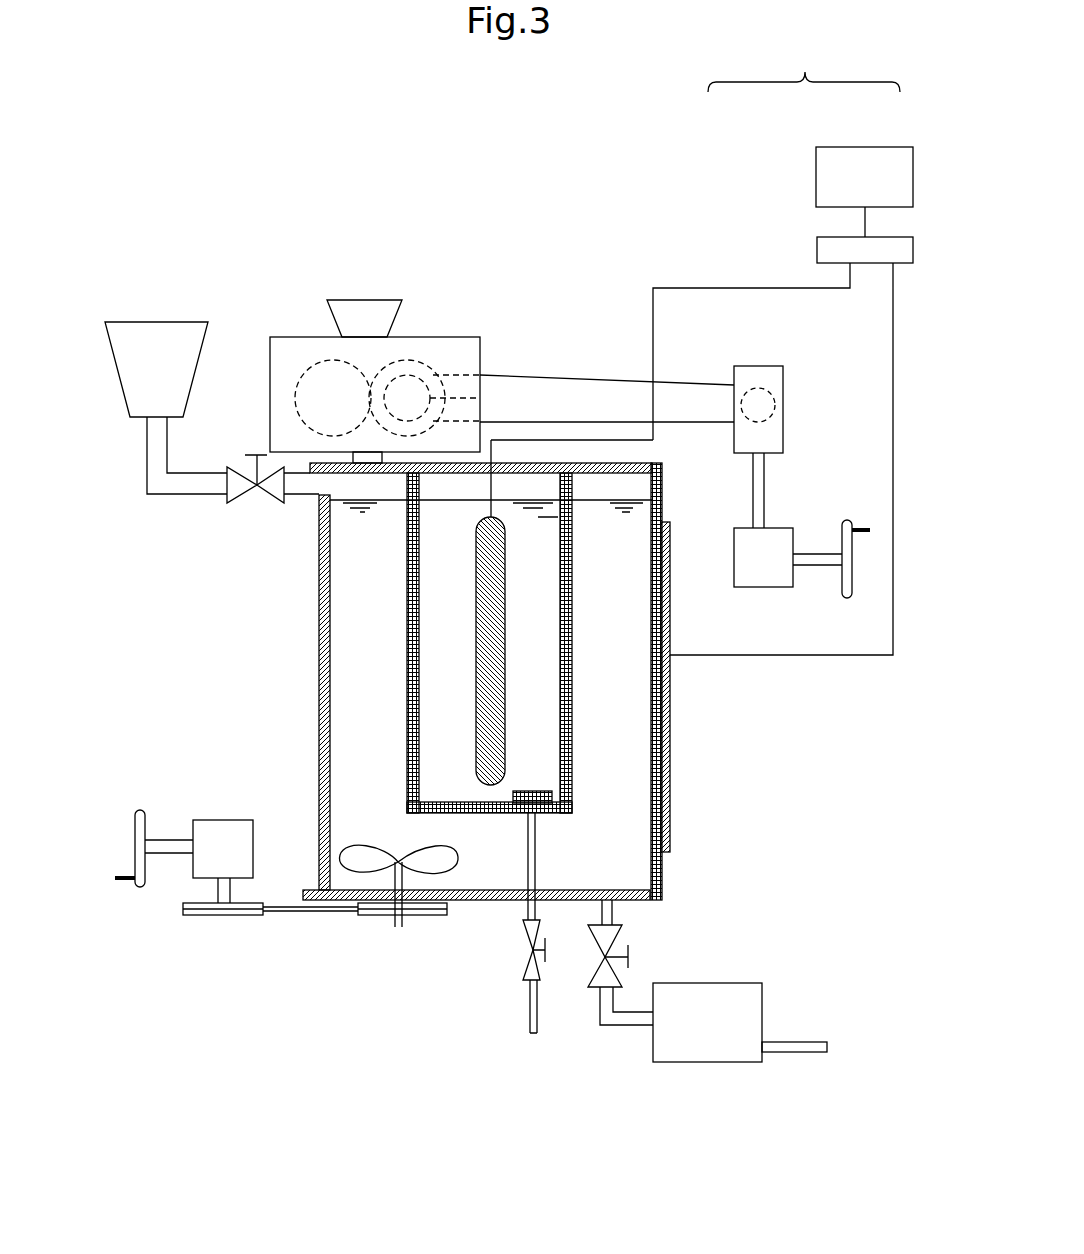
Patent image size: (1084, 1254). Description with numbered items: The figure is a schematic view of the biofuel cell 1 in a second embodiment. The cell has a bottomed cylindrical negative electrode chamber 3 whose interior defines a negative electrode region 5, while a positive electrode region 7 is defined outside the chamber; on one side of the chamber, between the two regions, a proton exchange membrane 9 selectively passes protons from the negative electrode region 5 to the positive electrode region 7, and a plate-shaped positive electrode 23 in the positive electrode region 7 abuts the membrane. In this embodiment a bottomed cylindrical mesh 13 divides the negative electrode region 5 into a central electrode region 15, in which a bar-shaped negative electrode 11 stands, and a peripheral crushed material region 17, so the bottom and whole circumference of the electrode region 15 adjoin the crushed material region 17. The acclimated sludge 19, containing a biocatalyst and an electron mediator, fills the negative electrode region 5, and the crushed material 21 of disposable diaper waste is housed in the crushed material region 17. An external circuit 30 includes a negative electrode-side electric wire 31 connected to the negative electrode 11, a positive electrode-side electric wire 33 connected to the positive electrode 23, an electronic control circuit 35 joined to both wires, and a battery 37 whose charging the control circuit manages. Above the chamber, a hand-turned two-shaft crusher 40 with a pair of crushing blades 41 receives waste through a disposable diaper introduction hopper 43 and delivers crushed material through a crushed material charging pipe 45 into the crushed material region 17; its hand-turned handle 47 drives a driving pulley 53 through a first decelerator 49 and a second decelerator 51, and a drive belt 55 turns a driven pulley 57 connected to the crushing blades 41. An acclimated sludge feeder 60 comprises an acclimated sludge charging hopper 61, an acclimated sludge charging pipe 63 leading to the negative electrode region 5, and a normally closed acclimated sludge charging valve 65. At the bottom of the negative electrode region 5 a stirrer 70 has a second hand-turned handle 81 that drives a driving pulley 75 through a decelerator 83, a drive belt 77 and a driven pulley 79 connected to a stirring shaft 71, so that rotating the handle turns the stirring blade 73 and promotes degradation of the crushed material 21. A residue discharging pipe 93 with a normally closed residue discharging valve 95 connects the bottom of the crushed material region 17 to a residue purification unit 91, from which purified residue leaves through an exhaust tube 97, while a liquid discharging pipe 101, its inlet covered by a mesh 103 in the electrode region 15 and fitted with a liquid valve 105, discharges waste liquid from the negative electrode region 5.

The biofuel cell 1 is at (236, 239).
The negative electrode chamber 3 is at (318, 745).
The negative electrode region 5 is at (498, 850).
The positive electrode region 7 is at (711, 708).
The proton exchange membrane 9 is at (662, 877).
The negative electrode 11 is at (492, 550).
The mesh 13 is at (407, 703).
The electrode region 15 is at (533, 732).
The crushed material region 17 is at (348, 628).
The acclimated sludge 19 is at (455, 523).
The crushed material 21 is at (353, 573).
The positive electrode 23 is at (670, 725).
The external circuit 30 is at (804, 66).
The negative electrode-side electric wire 31 is at (722, 288).
The positive electrode-side electric wire 33 is at (893, 377).
The electronic control circuit 35 is at (827, 252).
The battery 37 is at (853, 163).
The crusher 40 is at (476, 316).
The crushing blades 41 is at (388, 368).
The disposable diaper introduction hopper 43 is at (377, 312).
The crushed material charging pipe 45 is at (358, 453).
The hand-turned handle 47 is at (847, 530).
The first decelerator 49 is at (765, 565).
The second decelerator 51 is at (753, 377).
The driving pulley 53 is at (780, 402).
The drive belt 55 is at (670, 383).
The driven pulley 57 is at (480, 398).
The acclimated sludge feeder 60 is at (91, 368).
The acclimated sludge charging hopper 61 is at (160, 343).
The acclimated sludge charging pipe 63 is at (182, 482).
The acclimated sludge charging valve 65 is at (273, 483).
The stirrer 70 is at (392, 822).
The stirring shaft 71 is at (397, 877).
The stirring blade 73 is at (353, 857).
The driving pulley 75 is at (223, 910).
The drive belt 77 is at (300, 908).
The driven pulley 79 is at (402, 922).
The second hand-turned handle 81 is at (140, 822).
The decelerator 83 is at (227, 830).
The residue purification unit 91 is at (682, 1007).
The residue discharging pipe 93 is at (603, 1002).
The residue discharging valve 95 is at (605, 937).
The exhaust tube 97 is at (780, 1045).
The liquid discharging pipe 101 is at (533, 850).
The mesh 103 is at (563, 798).
The liquid valve 105 is at (527, 975).